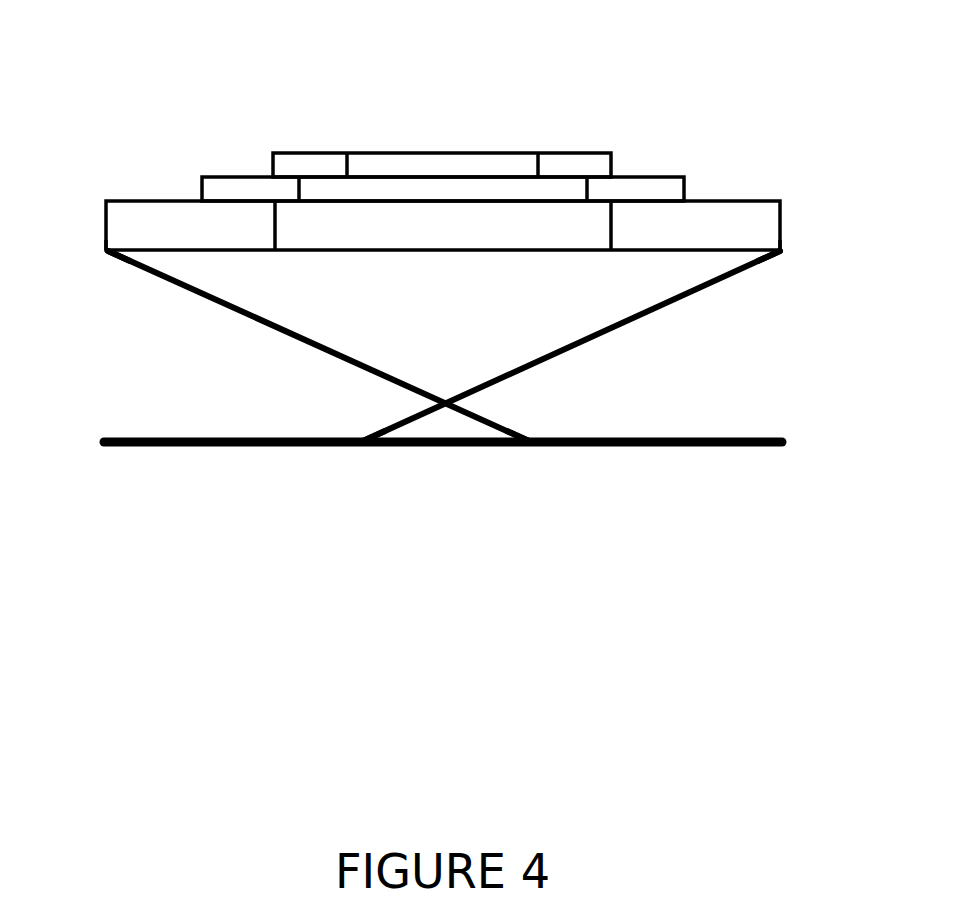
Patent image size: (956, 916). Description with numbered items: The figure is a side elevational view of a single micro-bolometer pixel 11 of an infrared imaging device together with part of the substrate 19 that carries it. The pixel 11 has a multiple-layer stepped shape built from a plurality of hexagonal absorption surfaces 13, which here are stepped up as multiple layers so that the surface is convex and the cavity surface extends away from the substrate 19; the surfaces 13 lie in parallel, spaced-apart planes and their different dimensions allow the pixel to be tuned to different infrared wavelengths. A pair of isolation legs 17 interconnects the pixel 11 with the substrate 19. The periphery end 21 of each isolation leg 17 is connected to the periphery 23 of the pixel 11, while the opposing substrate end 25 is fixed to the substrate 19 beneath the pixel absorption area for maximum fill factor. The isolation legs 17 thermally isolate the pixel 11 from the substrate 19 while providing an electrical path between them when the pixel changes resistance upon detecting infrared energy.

The micro-bolometer pixel 11 is at (215, 103).
The hexagonal absorption surfaces 13 is at (453, 151).
The isolation legs 17 is at (190, 298).
The substrate 19 is at (733, 447).
The periphery end 21 is at (116, 258).
The periphery 23 is at (106, 251).
The substrate end 25 is at (377, 423).